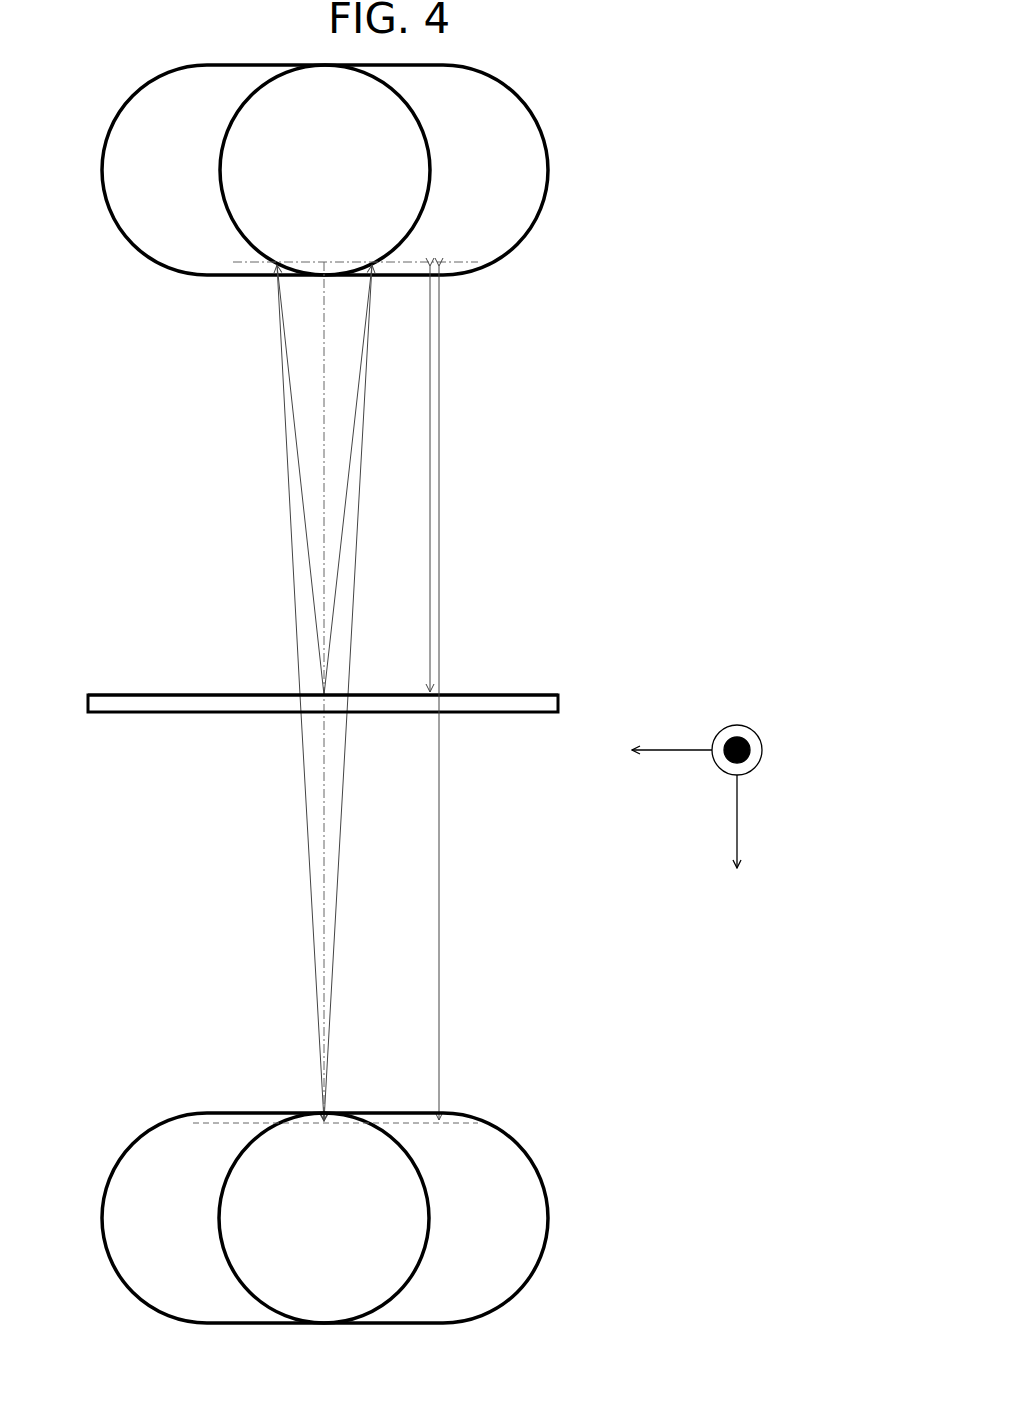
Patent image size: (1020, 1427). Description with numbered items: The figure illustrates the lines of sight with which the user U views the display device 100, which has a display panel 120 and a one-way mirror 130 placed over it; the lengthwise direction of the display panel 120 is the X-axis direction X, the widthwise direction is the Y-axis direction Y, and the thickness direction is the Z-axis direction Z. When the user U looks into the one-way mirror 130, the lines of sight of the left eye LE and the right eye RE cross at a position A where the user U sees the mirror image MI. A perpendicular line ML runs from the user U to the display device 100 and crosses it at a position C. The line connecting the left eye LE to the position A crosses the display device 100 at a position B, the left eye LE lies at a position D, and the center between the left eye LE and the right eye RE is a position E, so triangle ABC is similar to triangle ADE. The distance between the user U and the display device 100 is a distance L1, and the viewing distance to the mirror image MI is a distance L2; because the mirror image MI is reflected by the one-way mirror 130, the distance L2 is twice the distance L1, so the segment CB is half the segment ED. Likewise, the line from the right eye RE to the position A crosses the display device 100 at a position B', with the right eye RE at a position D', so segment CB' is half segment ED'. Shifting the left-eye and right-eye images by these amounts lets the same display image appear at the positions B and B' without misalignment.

The display device 100 is at (560, 670).
The display panel 120 is at (485, 712).
The one-way mirror 130 is at (458, 694).
The user U is at (513, 252).
The right eye RE is at (277, 268).
The left eye LE is at (372, 268).
The mirror image MI is at (520, 1141).
The perpendicular line ML is at (325, 826).
The position A is at (322, 1118).
The position B is at (376, 661).
The position B' is at (243, 657).
The position C is at (324, 694).
The position D is at (427, 329).
The position D' is at (239, 328).
The position E is at (325, 264).
The distance L1 is at (412, 479).
The distance L2 is at (452, 693).
The X-axis direction X is at (748, 741).
The Y-axis direction Y is at (672, 770).
The Z-axis direction Z is at (751, 821).